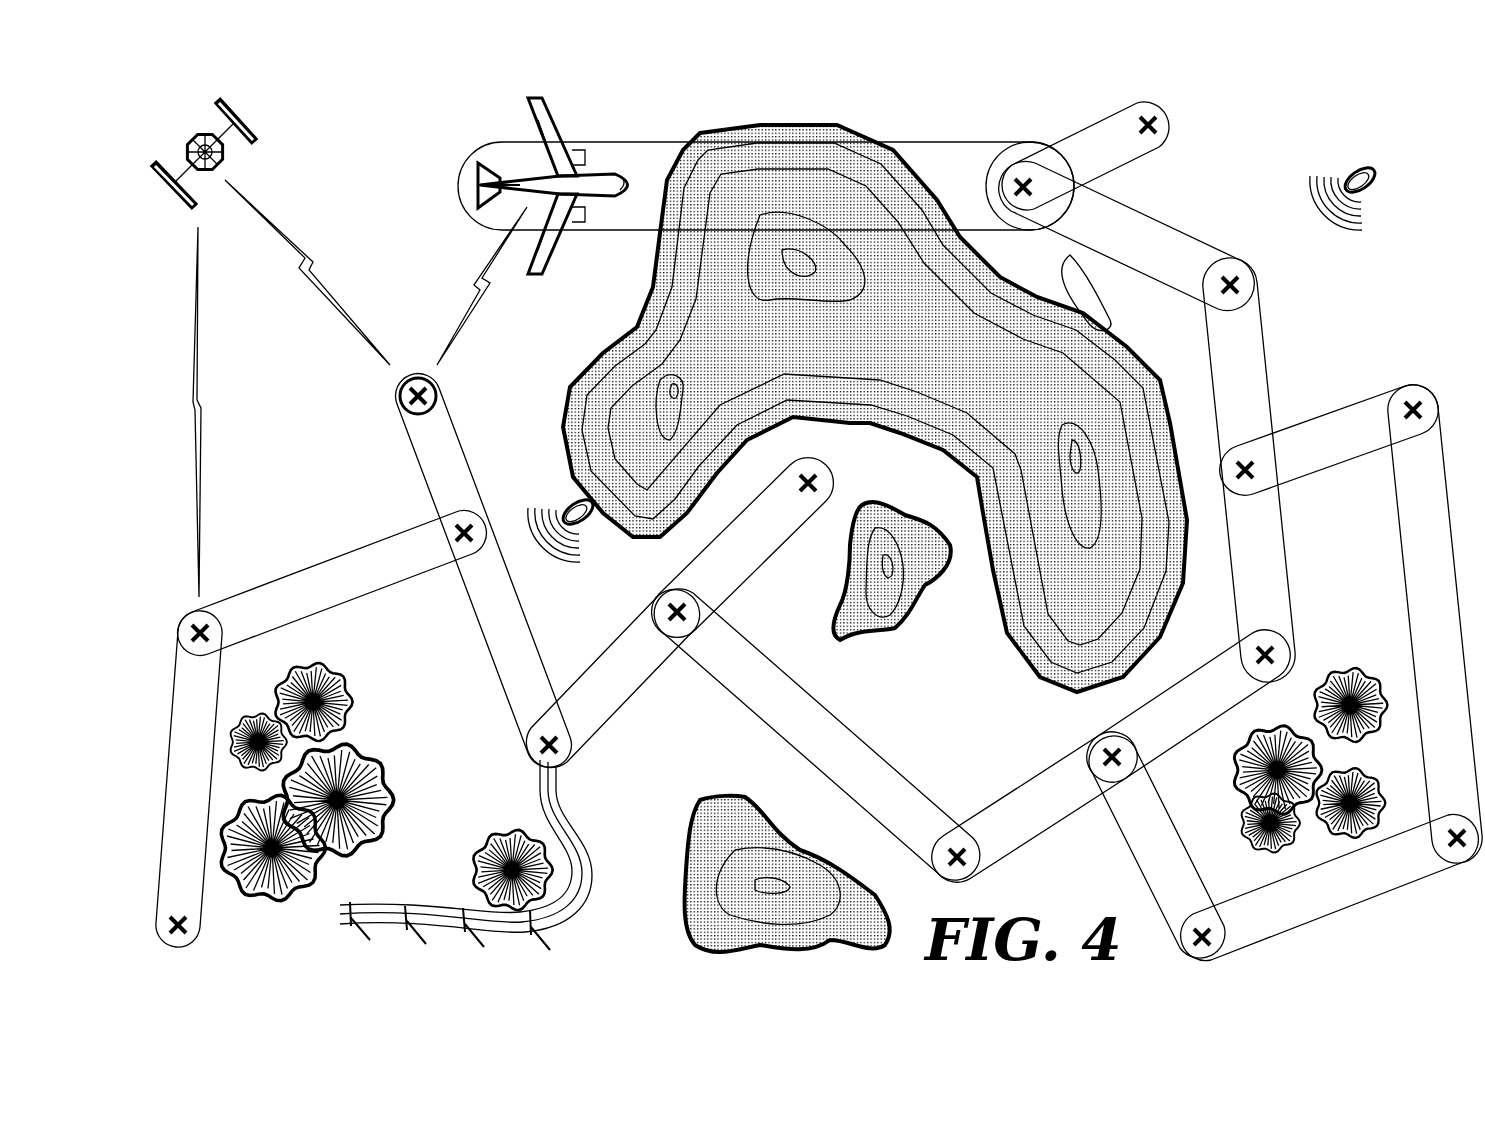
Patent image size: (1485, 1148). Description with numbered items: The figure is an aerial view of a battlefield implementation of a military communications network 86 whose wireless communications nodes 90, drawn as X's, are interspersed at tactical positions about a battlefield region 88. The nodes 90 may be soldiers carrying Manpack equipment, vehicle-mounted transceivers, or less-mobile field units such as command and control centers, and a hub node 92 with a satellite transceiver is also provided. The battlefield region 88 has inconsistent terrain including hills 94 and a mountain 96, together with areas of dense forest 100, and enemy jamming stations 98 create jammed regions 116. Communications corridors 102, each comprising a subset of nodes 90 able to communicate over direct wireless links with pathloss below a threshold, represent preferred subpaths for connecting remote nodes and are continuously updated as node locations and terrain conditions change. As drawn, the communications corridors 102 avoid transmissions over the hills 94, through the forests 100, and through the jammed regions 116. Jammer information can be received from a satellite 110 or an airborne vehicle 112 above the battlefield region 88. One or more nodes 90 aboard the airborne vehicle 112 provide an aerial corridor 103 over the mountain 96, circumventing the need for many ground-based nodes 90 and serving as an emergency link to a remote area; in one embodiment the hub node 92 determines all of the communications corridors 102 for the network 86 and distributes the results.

The military communications network 86 is at (355, 500).
The battlefield region 88 is at (1090, 898).
The wireless communications node 90 is at (1010, 188).
The hub node 92 is at (398, 393).
The hill 94 is at (890, 622).
The mountain 96 is at (612, 352).
The enemy jamming station 98 is at (570, 498).
The dense forest 100 is at (366, 724).
The communications corridor 102 is at (1216, 244).
The aerial corridor 103 is at (955, 143).
The satellite 110 is at (196, 137).
The airborne vehicle 112 is at (620, 172).
The jammed region 116 is at (568, 570).